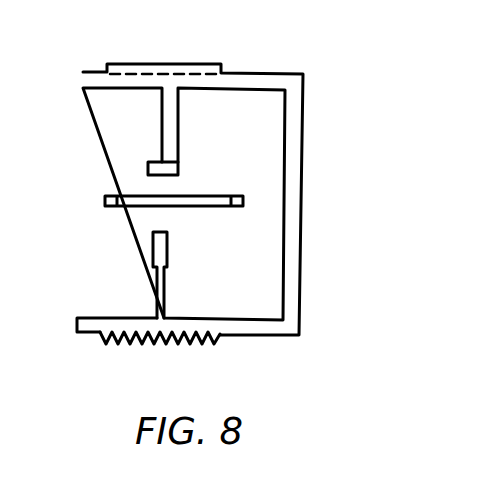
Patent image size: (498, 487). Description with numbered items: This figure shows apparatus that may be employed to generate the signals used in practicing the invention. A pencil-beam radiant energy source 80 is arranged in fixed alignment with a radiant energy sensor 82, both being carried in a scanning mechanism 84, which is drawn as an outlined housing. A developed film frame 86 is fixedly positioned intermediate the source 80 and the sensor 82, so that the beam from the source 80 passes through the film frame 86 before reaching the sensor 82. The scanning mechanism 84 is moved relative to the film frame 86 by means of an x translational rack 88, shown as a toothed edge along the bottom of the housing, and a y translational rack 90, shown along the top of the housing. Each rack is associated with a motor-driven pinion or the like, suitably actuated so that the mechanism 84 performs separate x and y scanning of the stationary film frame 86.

The pencil-beam radiant energy source 80 is at (154, 243).
The radiant energy sensor 82 is at (147, 170).
The scanning mechanism 84 is at (305, 90).
The developed film frame 86 is at (192, 201).
The x translational rack 88 is at (108, 333).
The y translational rack 90 is at (196, 63).